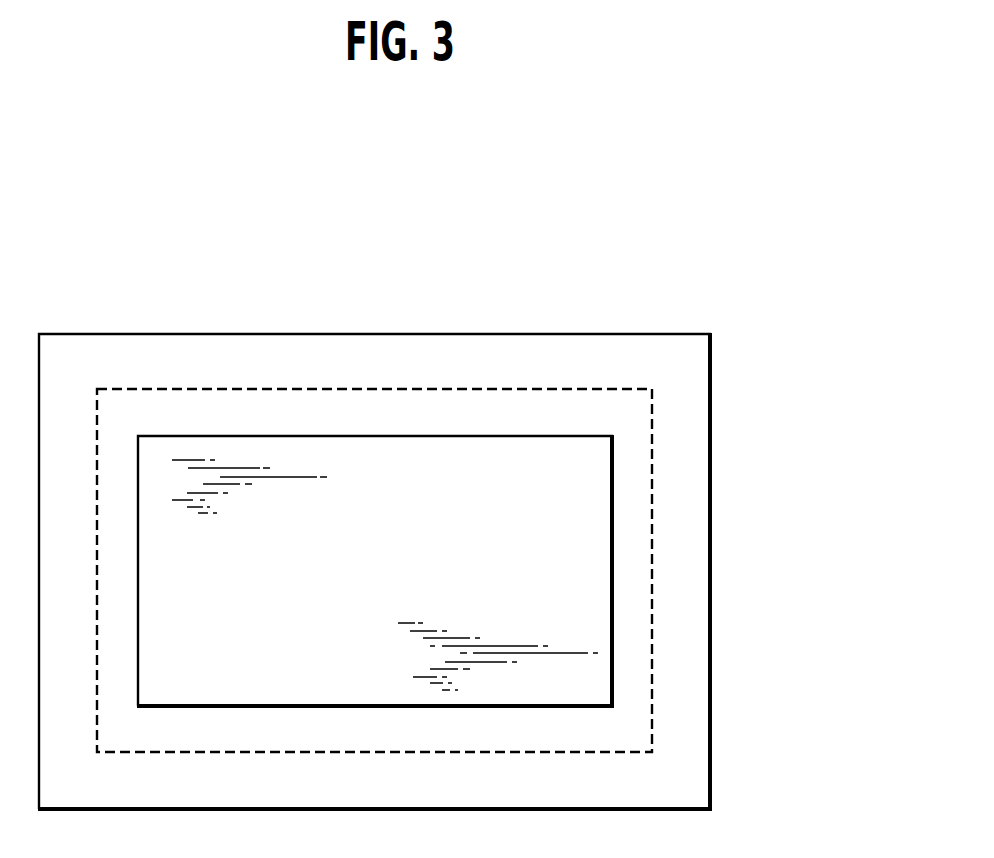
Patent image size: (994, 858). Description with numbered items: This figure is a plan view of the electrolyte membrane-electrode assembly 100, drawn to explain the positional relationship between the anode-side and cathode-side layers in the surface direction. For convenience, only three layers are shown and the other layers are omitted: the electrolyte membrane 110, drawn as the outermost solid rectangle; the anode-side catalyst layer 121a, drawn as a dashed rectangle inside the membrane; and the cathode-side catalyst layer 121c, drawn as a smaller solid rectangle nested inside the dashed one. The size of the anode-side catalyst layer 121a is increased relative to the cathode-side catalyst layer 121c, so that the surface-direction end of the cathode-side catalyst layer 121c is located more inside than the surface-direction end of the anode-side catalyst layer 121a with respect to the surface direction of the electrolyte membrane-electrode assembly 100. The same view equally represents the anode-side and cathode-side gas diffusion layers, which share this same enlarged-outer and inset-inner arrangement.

The electrolyte membrane-electrode assembly 100 is at (123, 281).
The electrolyte membrane 110 is at (700, 409).
The anode-side catalyst layer 121a is at (640, 481).
The cathode-side catalyst layer 121c is at (600, 564).